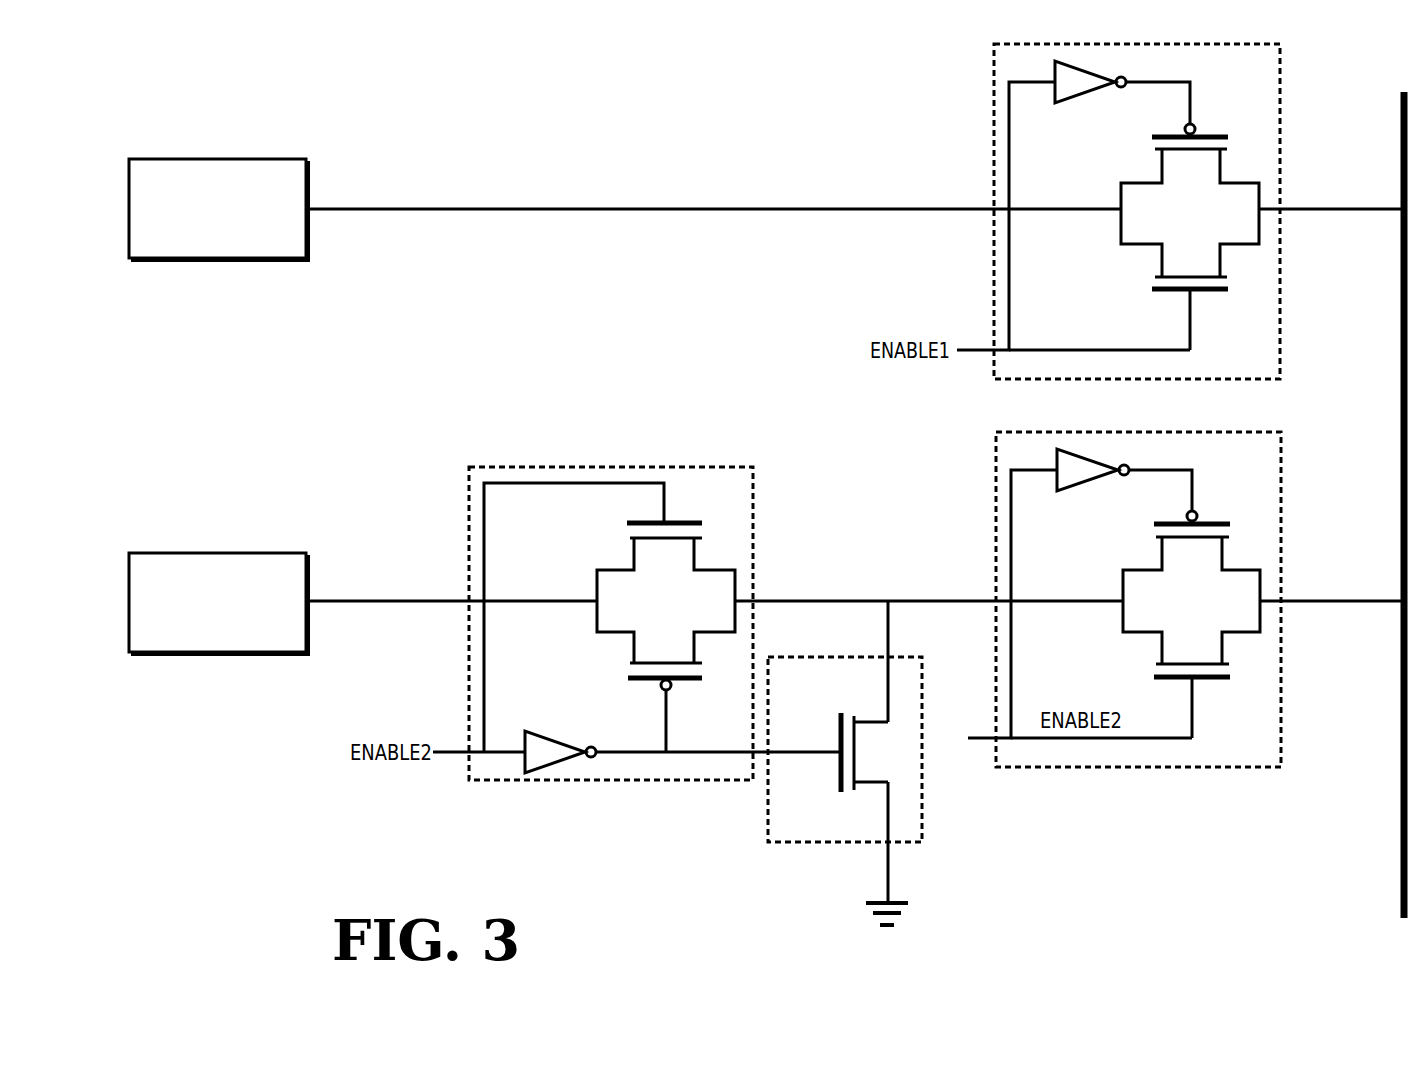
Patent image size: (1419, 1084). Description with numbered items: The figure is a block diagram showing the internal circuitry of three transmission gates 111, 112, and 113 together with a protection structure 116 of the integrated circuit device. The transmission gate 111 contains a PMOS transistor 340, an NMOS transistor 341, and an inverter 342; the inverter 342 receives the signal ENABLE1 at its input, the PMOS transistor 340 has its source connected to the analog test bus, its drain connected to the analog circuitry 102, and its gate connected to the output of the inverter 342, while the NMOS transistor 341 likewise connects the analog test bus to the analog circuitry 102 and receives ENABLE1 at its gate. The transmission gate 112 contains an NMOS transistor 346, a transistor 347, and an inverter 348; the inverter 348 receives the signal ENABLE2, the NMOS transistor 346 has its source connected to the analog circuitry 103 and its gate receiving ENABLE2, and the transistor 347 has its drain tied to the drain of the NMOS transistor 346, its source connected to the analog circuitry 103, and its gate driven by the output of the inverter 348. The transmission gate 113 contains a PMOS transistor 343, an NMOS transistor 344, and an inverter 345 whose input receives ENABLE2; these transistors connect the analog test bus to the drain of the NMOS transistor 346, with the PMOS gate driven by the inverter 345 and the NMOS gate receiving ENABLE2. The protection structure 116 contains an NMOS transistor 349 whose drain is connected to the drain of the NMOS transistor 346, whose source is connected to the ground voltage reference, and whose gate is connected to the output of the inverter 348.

The analog circuitry 102 is at (218, 209).
The analog circuitry 103 is at (218, 603).
The transmission gate 111 is at (993, 102).
The transmission gate 112 is at (468, 492).
The transmission gate 113 is at (996, 440).
The protection structure 116 is at (790, 843).
The PMOS transistor 340 is at (1153, 134).
The NMOS transistor 341 is at (1152, 290).
The inverter 342 is at (1058, 104).
The PMOS transistor 343 is at (1153, 524).
The NMOS transistor 344 is at (1232, 677).
The inverter 345 is at (1065, 492).
The NMOS transistor 346 is at (628, 538).
The PMOS transistor 347 is at (628, 678).
The inverter 348 is at (538, 774).
The NMOS transistor 349 is at (838, 716).